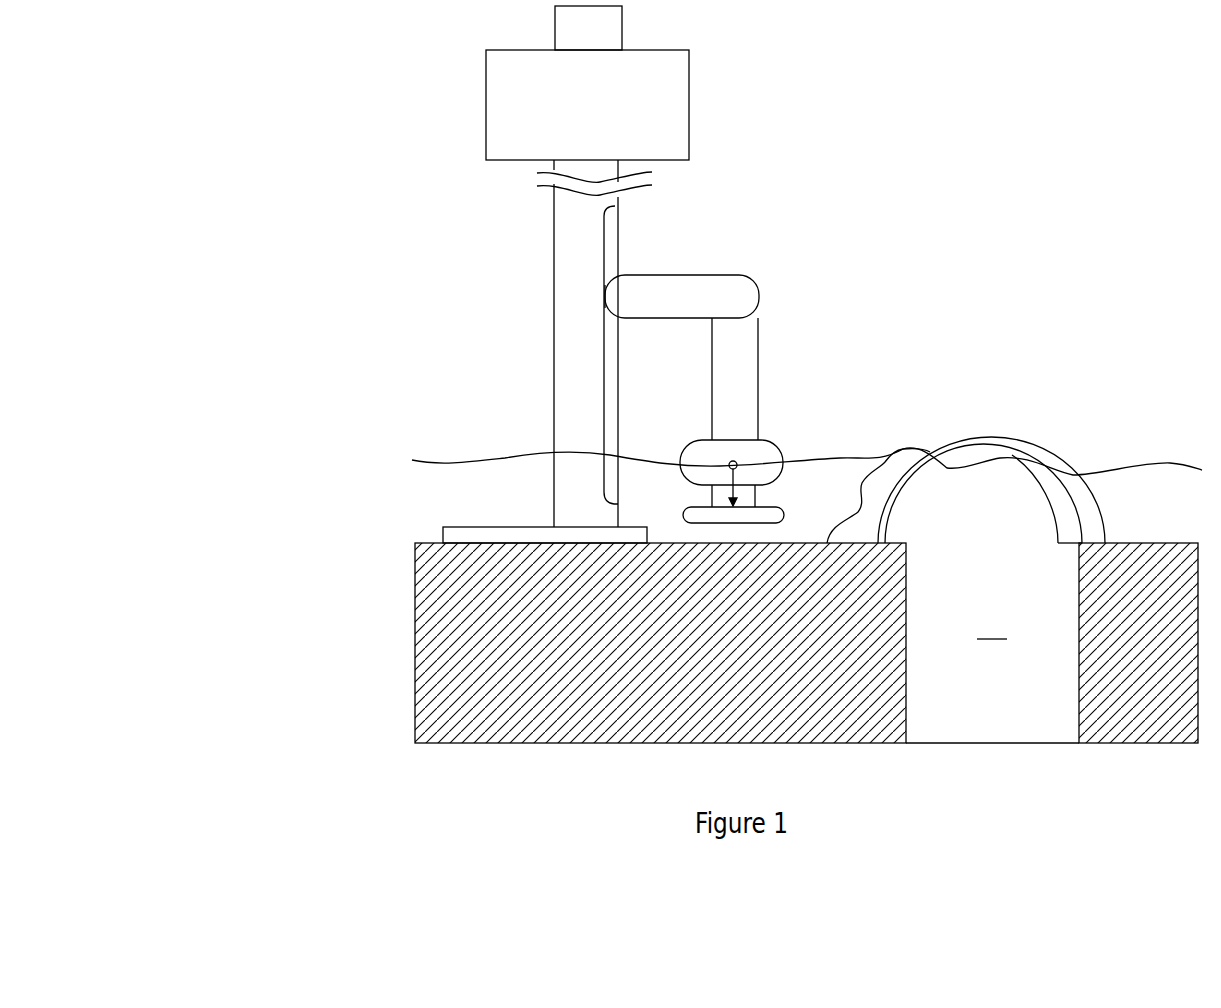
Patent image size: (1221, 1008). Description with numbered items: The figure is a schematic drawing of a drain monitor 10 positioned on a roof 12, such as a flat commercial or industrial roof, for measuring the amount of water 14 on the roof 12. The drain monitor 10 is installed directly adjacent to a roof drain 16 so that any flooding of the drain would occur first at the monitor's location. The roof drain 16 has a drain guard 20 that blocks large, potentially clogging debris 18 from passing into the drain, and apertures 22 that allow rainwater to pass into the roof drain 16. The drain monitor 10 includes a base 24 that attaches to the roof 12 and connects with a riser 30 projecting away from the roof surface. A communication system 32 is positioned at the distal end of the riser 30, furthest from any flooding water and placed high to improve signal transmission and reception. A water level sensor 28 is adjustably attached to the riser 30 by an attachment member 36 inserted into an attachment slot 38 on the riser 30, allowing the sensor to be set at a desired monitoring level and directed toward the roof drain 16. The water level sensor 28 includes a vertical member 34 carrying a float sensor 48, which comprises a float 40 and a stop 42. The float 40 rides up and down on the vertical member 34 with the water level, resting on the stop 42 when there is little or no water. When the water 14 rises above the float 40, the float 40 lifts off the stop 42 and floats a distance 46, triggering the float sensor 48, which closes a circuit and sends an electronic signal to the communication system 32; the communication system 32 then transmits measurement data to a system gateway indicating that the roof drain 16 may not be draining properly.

The drain monitor 10 is at (358, 133).
The roof 12 is at (428, 543).
The water 14 is at (473, 460).
The roof drain 16 is at (992, 676).
The debris 18 is at (913, 447).
The drain guard 20 is at (1047, 448).
The apertures 22 is at (1068, 485).
The base 24 is at (465, 527).
The water level sensor 28 is at (731, 275).
The riser 30 is at (554, 243).
The communication system 32 is at (486, 112).
The vertical member 34 is at (758, 365).
The attachment member 36 is at (605, 295).
The attachment slot 38 is at (604, 418).
The float 40 is at (723, 440).
The stop 42 is at (777, 507).
The distance 46 is at (740, 463).
The float sensor 48 is at (732, 482).